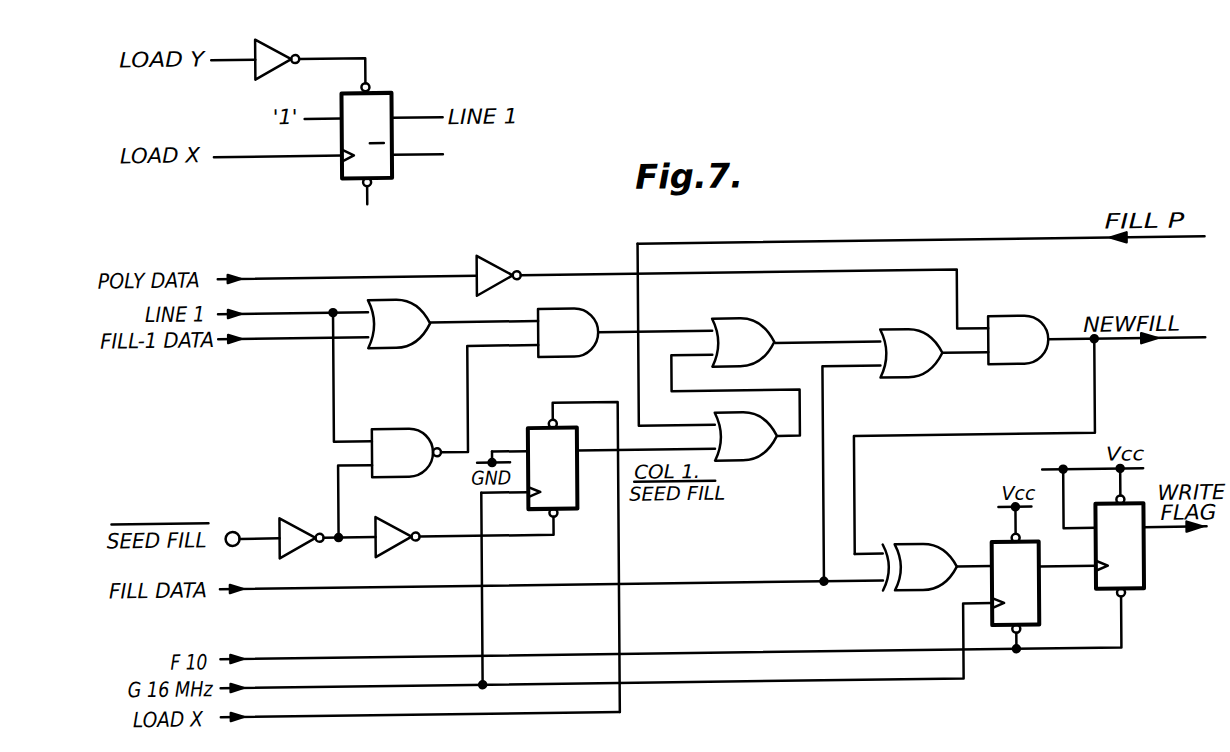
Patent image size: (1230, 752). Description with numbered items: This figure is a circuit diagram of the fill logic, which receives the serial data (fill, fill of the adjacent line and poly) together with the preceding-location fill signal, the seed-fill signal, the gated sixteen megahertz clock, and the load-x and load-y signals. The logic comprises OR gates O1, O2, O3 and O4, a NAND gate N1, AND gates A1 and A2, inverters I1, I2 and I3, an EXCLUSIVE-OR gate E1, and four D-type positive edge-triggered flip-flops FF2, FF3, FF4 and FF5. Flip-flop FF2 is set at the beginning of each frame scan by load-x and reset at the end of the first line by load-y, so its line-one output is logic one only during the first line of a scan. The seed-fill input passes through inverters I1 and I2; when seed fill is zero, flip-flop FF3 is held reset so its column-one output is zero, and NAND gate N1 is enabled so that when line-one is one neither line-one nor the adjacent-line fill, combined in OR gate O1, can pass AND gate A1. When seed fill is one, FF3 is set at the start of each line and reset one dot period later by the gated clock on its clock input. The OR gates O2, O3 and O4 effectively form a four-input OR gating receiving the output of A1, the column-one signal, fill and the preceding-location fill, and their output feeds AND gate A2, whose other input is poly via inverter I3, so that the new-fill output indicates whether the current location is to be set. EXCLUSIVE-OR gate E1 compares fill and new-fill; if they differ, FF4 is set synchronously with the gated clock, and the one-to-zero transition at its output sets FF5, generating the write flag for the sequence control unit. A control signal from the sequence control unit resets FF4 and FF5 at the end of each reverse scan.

The D-type positive edge-triggered flip-flop FF2 is at (395, 138).
The inverter I3 is at (493, 266).
The OR gate O1 is at (399, 323).
The AND gate A1 is at (568, 332).
The OR gate O2 is at (743, 342).
The OR gate O3 is at (746, 436).
The OR gate O4 is at (911, 353).
The AND gate A2 is at (1018, 339).
The NAND gate N1 is at (406, 452).
The EXCLUSIVE-OR gate E1 is at (920, 567).
The inverter I1 is at (297, 520).
The inverter I2 is at (401, 523).
The D-type positive edge-triggered flip-flop FF3 is at (567, 477).
The D-type positive edge-triggered flip-flop FF4 is at (1042, 583).
The D-type positive edge-triggered flip-flop FF5 is at (1147, 545).